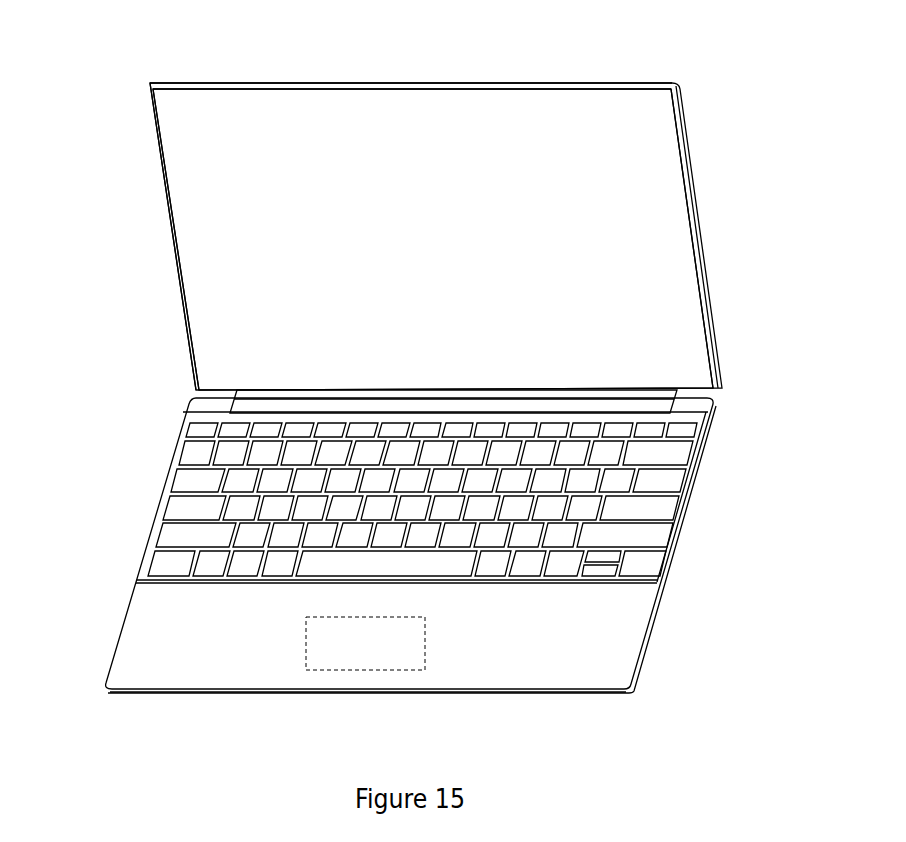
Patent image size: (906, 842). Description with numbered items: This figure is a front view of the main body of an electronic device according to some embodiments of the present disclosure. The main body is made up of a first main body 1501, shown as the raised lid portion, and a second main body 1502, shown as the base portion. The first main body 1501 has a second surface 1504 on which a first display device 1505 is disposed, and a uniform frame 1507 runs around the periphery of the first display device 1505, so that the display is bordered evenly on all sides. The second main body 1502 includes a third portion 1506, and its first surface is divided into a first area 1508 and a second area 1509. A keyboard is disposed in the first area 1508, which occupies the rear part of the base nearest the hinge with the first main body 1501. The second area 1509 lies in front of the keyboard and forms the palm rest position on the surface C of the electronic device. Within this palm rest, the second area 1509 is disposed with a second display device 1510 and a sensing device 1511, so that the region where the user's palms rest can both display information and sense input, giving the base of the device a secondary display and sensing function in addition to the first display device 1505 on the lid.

The first main body 1501 is at (657, 203).
The second main body 1502 is at (695, 478).
The second surface 1504 is at (433, 239).
The first display device 1505 is at (413, 248).
The third portion 1506 is at (132, 634).
The uniform frame 1507 is at (417, 87).
The first area 1508 is at (185, 470).
The second area 1509 is at (610, 667).
The second display device 1510 is at (143, 677).
The sensing device 1511 is at (393, 628).